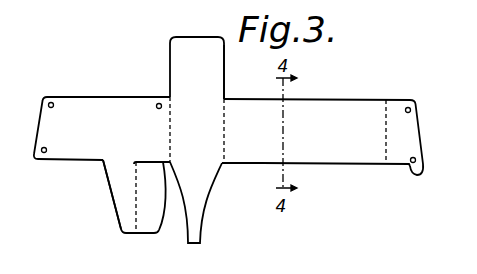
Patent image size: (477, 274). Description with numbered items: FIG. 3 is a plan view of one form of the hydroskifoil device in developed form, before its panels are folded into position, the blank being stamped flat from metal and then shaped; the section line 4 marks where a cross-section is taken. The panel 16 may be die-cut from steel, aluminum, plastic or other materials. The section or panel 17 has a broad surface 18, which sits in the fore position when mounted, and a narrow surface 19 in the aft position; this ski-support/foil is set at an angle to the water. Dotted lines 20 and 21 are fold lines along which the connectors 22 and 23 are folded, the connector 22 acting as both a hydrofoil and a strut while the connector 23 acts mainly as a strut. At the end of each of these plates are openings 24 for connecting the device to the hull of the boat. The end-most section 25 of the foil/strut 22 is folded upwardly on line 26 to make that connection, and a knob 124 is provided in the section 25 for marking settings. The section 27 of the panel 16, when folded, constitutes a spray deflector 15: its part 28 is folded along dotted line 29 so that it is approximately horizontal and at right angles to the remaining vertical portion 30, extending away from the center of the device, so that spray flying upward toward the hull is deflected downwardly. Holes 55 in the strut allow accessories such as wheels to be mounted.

The blank 4 is at (247, 164).
The spray deflector 15 is at (123, 233).
The panel 16 is at (347, 165).
The section or panel 17 is at (226, 65).
The broad surface 18 is at (173, 50).
The narrow surface 19 is at (203, 221).
The fold line 20 is at (222, 113).
The fold line 21 is at (173, 108).
The connector 22 is at (297, 108).
The connector 23 is at (105, 100).
The openings 24 is at (54, 103).
The end-most section 25 is at (419, 131).
The fold line 26 is at (385, 128).
The section 27 is at (105, 164).
The part of section 27 28 is at (153, 220).
The fold line 29 is at (135, 200).
The vertical portion 30 is at (117, 203).
The holes 55 is at (157, 109).
The knob 124 is at (416, 174).